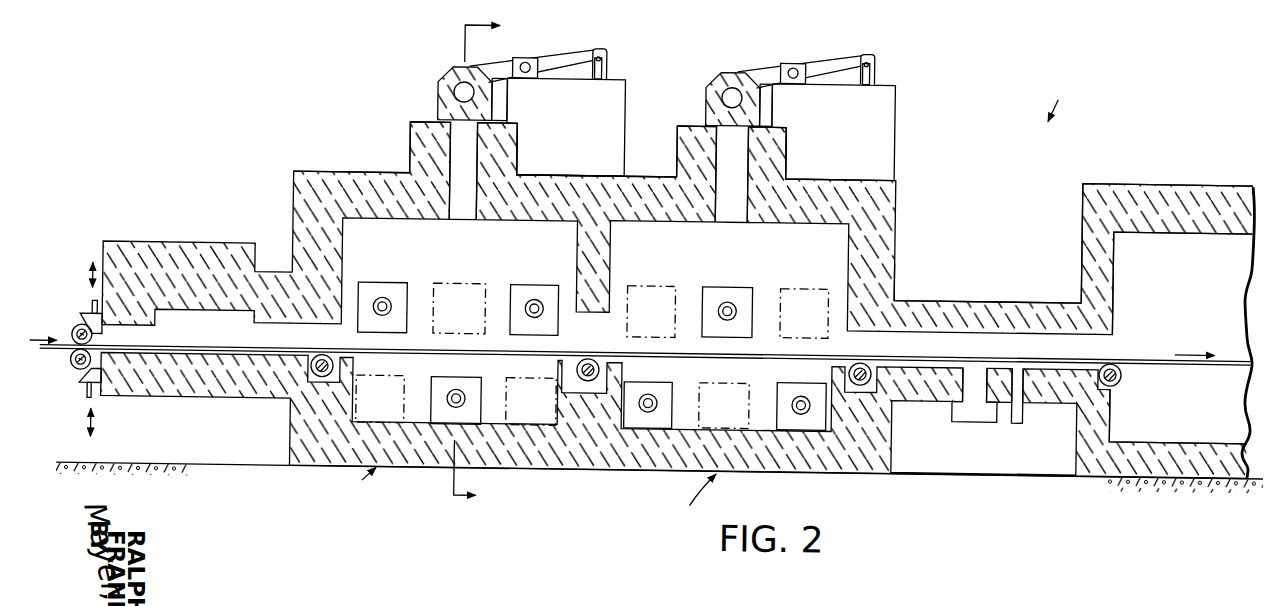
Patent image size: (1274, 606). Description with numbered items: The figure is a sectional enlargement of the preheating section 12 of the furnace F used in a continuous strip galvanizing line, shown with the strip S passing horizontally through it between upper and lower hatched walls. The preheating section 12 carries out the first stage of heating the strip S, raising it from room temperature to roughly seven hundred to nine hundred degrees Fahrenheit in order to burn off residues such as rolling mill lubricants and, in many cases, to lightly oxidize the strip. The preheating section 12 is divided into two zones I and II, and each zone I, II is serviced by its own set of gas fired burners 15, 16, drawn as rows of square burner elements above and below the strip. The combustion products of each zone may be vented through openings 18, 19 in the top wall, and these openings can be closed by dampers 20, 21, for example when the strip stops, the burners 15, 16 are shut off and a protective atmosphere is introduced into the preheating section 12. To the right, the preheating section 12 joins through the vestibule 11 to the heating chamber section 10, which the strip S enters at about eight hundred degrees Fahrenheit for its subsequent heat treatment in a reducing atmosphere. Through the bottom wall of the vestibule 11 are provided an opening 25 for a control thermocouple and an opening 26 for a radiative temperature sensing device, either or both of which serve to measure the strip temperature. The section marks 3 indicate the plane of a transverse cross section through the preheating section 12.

The heating chamber section 10 is at (1147, 178).
The vestibule 11 is at (971, 297).
The preheating section 12 is at (636, 170).
The gas fired burners 15 is at (500, 281).
The gas fired burners 16 is at (734, 278).
The opening 18 is at (456, 161).
The opening 19 is at (735, 153).
The damper 20 is at (441, 82).
The damper 21 is at (724, 70).
The opening for control thermocouple 25 is at (1020, 372).
The opening for radiative temperature sensing device 26 is at (975, 365).
The section line 3- 3 is at (458, 271).
The strip S is at (762, 354).
The furnace F is at (1061, 103).
The zone I is at (357, 499).
The zone II is at (690, 503).